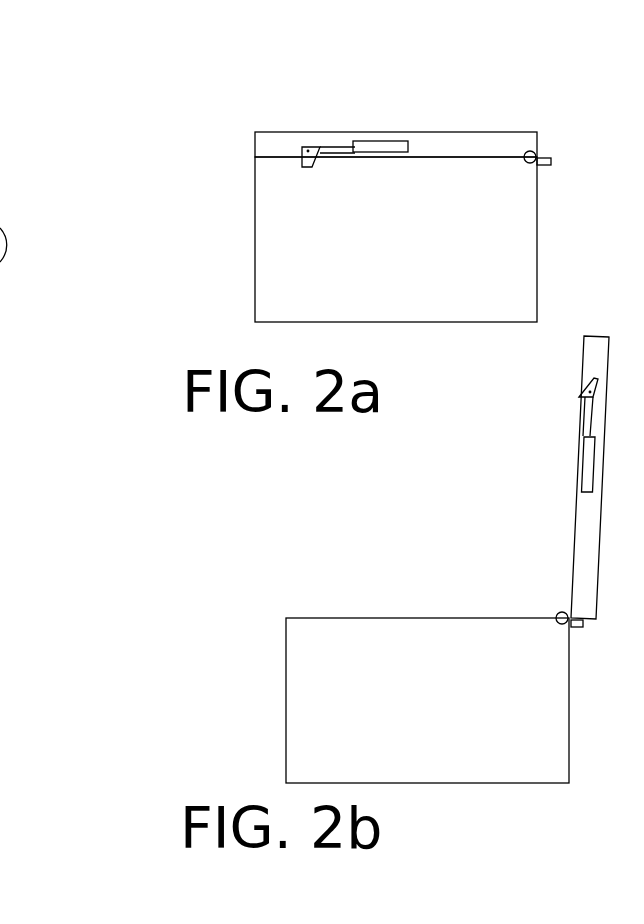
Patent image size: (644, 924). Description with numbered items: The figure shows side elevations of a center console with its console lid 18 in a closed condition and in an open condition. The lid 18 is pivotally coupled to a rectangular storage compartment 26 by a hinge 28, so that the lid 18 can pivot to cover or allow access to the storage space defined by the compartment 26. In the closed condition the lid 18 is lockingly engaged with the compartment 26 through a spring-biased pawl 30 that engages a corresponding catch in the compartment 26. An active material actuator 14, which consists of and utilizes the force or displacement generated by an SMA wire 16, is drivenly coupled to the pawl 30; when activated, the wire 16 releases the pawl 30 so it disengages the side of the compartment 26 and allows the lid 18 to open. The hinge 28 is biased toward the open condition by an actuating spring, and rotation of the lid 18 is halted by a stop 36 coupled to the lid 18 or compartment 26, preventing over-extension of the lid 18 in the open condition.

In FIG. 2a, the active material actuator 14 is at (388, 130).
In FIG. 2b, the active material actuator 14 is at (565, 425).
In FIG. 2a, the SMA wire 16 is at (337, 147).
In FIG. 2b, the SMA wire 16 is at (588, 416).
In FIG. 2a, the console lid 18 is at (487, 141).
In FIG. 2b, the console lid 18 is at (574, 557).
In FIG. 2a, the storage compartment 26 is at (353, 268).
In FIG. 2b, the storage compartment 26 is at (385, 728).
In FIG. 2a, the hinge 28 is at (538, 147).
In FIG. 2b, the hinge 28 is at (562, 618).
In FIG. 2a, the spring-biased pawl 30 is at (305, 148).
In FIG. 2b, the spring-biased pawl 30 is at (588, 387).
In FIG. 2a, the stop 36 is at (545, 167).
In FIG. 2b, the stop 36 is at (579, 628).